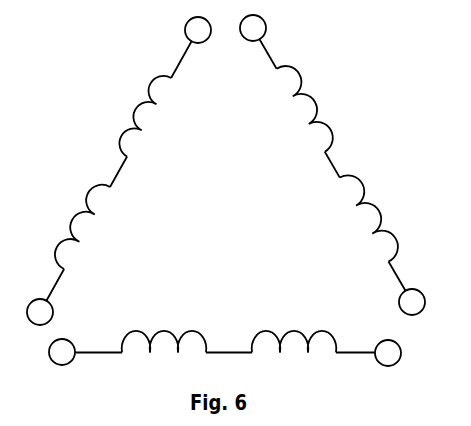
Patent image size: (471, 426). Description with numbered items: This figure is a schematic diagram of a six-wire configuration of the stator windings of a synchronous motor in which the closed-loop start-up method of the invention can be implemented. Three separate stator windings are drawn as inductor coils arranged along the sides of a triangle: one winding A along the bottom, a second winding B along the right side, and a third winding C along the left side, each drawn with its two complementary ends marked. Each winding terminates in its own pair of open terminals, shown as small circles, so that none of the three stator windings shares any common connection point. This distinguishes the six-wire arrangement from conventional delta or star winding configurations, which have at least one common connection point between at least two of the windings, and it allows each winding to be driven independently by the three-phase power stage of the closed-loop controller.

The phase A winding A is at (294, 325).
The phase B winding B is at (309, 109).
The phase C winding C is at (76, 227).